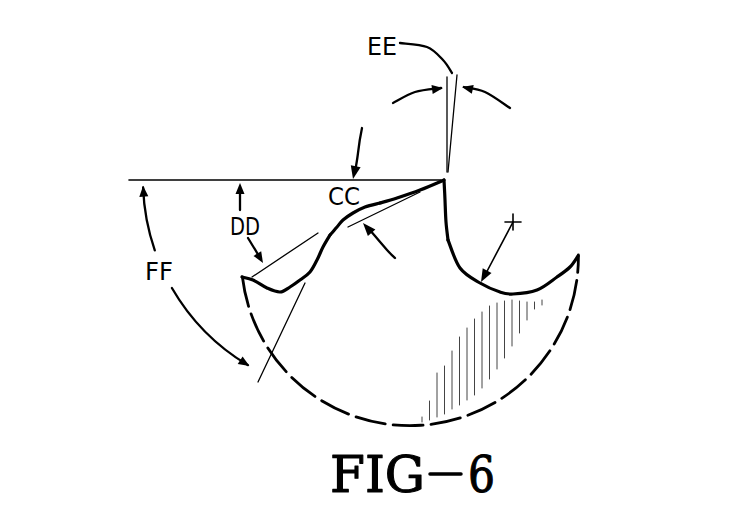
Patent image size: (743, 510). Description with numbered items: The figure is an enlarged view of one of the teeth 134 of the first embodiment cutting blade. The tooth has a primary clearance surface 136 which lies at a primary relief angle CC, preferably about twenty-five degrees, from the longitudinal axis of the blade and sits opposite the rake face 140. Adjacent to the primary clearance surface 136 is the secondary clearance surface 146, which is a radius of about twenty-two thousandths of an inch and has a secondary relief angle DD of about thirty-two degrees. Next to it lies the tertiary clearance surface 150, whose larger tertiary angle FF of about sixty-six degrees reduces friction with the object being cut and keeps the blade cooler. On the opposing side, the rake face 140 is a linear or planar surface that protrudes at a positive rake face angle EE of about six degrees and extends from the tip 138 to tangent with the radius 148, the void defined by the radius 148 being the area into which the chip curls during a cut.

The teeth 134 is at (541, 300).
The primary clearance surface 136 is at (416, 235).
The tip 138 is at (425, 190).
The rake face 140 is at (447, 233).
The secondary clearance surface 146 is at (340, 218).
The radius 148 is at (500, 244).
The tertiary clearance surface 150 is at (320, 255).